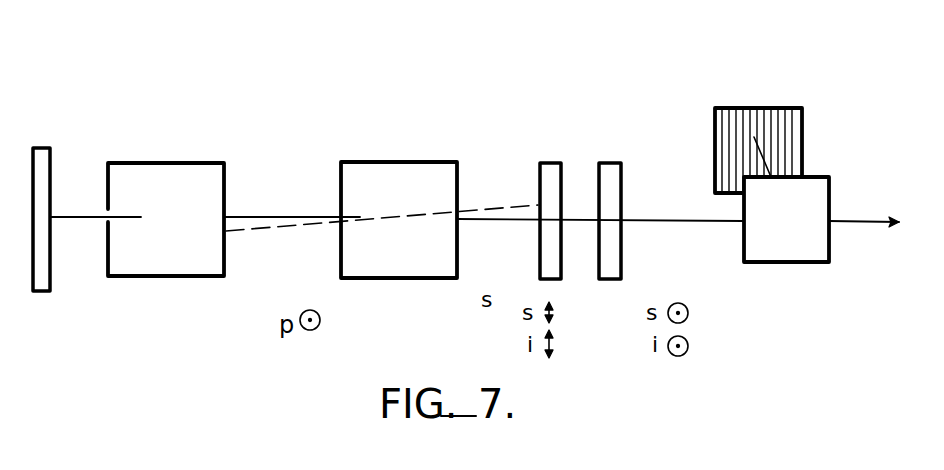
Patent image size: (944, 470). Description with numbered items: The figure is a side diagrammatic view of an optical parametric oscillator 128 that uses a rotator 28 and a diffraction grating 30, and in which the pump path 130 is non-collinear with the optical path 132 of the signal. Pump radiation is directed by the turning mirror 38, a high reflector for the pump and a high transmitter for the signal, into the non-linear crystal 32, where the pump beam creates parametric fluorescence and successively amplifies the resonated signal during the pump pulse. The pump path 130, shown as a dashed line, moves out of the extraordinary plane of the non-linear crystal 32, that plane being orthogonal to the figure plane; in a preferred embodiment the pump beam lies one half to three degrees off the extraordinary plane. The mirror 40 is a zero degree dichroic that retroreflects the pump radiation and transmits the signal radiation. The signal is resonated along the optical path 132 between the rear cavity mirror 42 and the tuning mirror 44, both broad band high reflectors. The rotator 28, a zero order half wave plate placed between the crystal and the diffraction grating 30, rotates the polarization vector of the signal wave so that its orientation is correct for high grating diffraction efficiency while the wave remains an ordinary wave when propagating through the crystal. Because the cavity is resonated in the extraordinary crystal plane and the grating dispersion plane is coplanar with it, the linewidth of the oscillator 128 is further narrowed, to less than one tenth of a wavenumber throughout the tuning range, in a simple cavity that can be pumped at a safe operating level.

The optical parametric oscillator 128 is at (570, 52).
The pump path 130 is at (297, 227).
The optical path of the signal 132 is at (263, 215).
The rear cavity mirror 42 is at (36, 292).
The turning mirror 38 is at (141, 277).
The non-linear crystal 32 is at (424, 279).
The mirror 40 is at (552, 170).
The rotator 28 is at (608, 170).
The tuning mirror 44 is at (755, 108).
The diffraction grating 30 is at (772, 263).